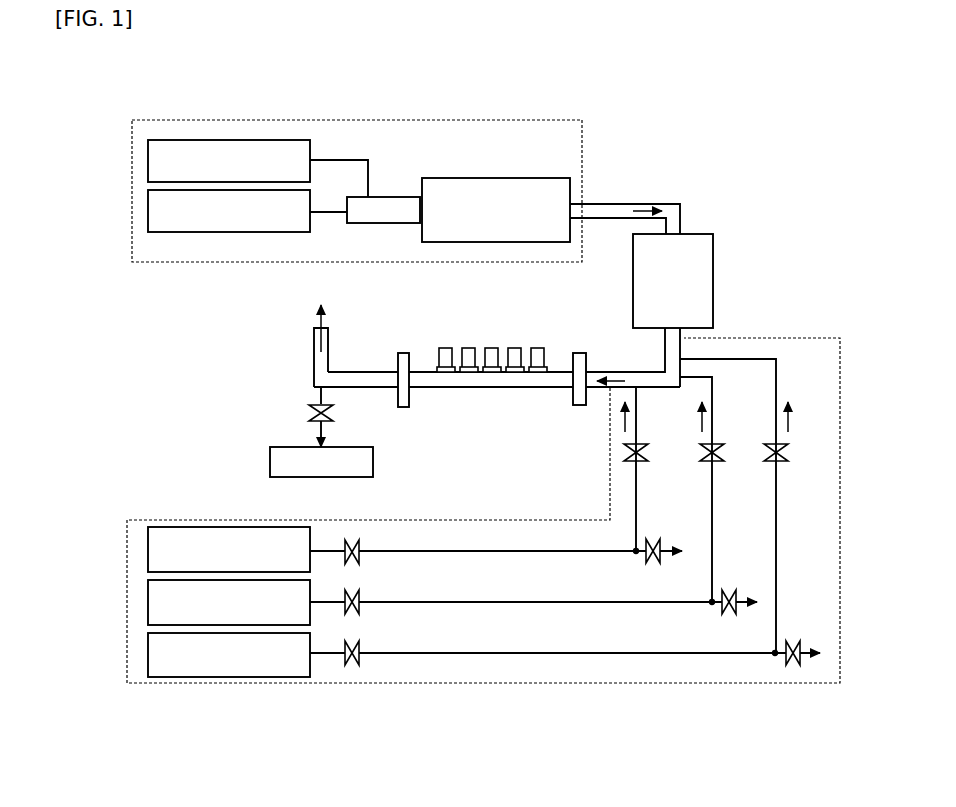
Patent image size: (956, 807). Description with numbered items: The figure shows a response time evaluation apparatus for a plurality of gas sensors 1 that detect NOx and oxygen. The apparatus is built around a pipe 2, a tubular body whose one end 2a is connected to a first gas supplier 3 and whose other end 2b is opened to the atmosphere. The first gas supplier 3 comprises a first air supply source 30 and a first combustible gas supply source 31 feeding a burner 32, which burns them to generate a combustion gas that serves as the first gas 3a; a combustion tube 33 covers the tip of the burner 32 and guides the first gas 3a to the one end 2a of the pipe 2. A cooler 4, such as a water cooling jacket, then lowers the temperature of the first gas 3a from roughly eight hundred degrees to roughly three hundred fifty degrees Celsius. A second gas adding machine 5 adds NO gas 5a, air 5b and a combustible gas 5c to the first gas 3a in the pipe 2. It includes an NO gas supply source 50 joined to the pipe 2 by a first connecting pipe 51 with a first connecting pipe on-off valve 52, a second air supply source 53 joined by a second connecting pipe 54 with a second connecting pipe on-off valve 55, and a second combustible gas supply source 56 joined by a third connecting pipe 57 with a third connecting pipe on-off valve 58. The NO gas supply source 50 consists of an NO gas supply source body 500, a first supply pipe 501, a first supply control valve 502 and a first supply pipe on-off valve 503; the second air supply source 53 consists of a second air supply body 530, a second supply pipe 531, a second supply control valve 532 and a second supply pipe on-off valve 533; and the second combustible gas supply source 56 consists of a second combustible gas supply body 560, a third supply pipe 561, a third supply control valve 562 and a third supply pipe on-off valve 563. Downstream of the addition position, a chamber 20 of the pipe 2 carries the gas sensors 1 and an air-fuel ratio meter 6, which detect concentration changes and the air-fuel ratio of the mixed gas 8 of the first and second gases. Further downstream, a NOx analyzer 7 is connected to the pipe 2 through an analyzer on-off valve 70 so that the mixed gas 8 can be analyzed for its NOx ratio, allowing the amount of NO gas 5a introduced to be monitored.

The gas sensor 1 is at (460, 346).
The pipe 2 is at (682, 224).
The one end of the pipe 2a is at (612, 204).
The other end of the pipe 2b is at (313, 342).
The first gas supplier 3 is at (336, 164).
The first gas 3a is at (647, 204).
The cooler 4 is at (714, 275).
The second gas adding machine 5 is at (622, 685).
The NO gas 5a is at (622, 425).
The air 5b is at (700, 425).
The combustible gas 5c is at (790, 425).
The air-fuel ratio meter 6 is at (446, 348).
The NOx analyzer 7 is at (270, 463).
The mixed gas 8 is at (611, 378).
The chamber 20 is at (492, 388).
The first air supply source 30 is at (148, 160).
The first combustible gas supply source 31 is at (148, 210).
The burner 32 is at (395, 197).
The combustion tube 33 is at (477, 178).
The NO gas supply source 50 is at (140, 527).
The first connecting pipe 51 is at (634, 490).
The first connecting pipe on-off valve 52 is at (623, 452).
The second air supply source 53 is at (142, 592).
The second connecting pipe 54 is at (711, 492).
The second connecting pipe on-off valve 55 is at (700, 453).
The second combustible gas supply source 56 is at (142, 647).
The third connecting pipe 57 is at (778, 496).
The third connecting pipe on-off valve 58 is at (788, 454).
The analyzer on-off valve 70 is at (308, 413).
The NO gas supply source body 500 is at (148, 547).
The first supply pipe 501 is at (428, 549).
The first supply control valve 502 is at (352, 539).
The first supply pipe on-off valve 503 is at (635, 545).
The second air supply body 530 is at (148, 605).
The second supply pipe 531 is at (493, 604).
The second supply control valve 532 is at (360, 604).
The second supply pipe on-off valve 533 is at (729, 612).
The second combustible gas supply body 560 is at (148, 665).
The third supply pipe 561 is at (553, 655).
The third supply control valve 562 is at (352, 666).
The third supply pipe on-off valve 563 is at (793, 666).